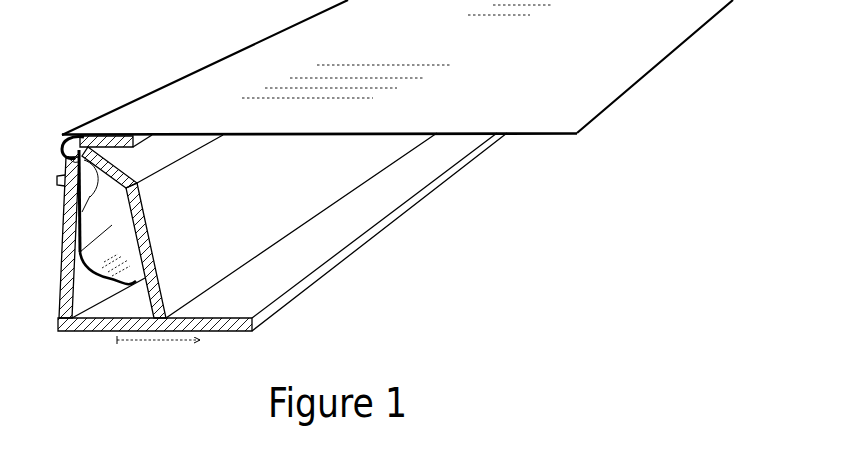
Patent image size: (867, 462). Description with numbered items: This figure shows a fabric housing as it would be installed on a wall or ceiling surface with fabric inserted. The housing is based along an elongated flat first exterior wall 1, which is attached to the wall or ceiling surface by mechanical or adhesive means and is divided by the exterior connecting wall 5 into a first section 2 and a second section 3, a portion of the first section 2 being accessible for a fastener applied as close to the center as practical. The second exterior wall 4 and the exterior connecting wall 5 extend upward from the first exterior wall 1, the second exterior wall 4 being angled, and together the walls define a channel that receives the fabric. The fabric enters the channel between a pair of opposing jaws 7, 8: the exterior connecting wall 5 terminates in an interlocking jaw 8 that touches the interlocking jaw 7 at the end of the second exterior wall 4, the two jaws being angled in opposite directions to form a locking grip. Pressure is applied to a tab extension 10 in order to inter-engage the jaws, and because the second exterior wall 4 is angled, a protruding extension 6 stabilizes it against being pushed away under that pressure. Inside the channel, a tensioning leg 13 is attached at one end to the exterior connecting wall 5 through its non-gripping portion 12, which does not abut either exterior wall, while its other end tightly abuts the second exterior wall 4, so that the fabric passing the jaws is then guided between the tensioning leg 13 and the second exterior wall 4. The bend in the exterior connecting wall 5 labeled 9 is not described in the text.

The first exterior wall 1 is at (150, 341).
The first section 2 is at (201, 316).
The second section 3 is at (127, 317).
The second exterior wall 4 is at (62, 279).
The exterior connecting wall 5 is at (153, 242).
The protruding extension 6 is at (55, 180).
The interlocking jaw 7 is at (62, 159).
The interlocking jaw 8 is at (59, 153).
The shoulder 9 is at (134, 178).
The tab extension 10 is at (123, 172).
The non-gripping portion 12 is at (94, 188).
The tensioning leg 13 is at (86, 218).